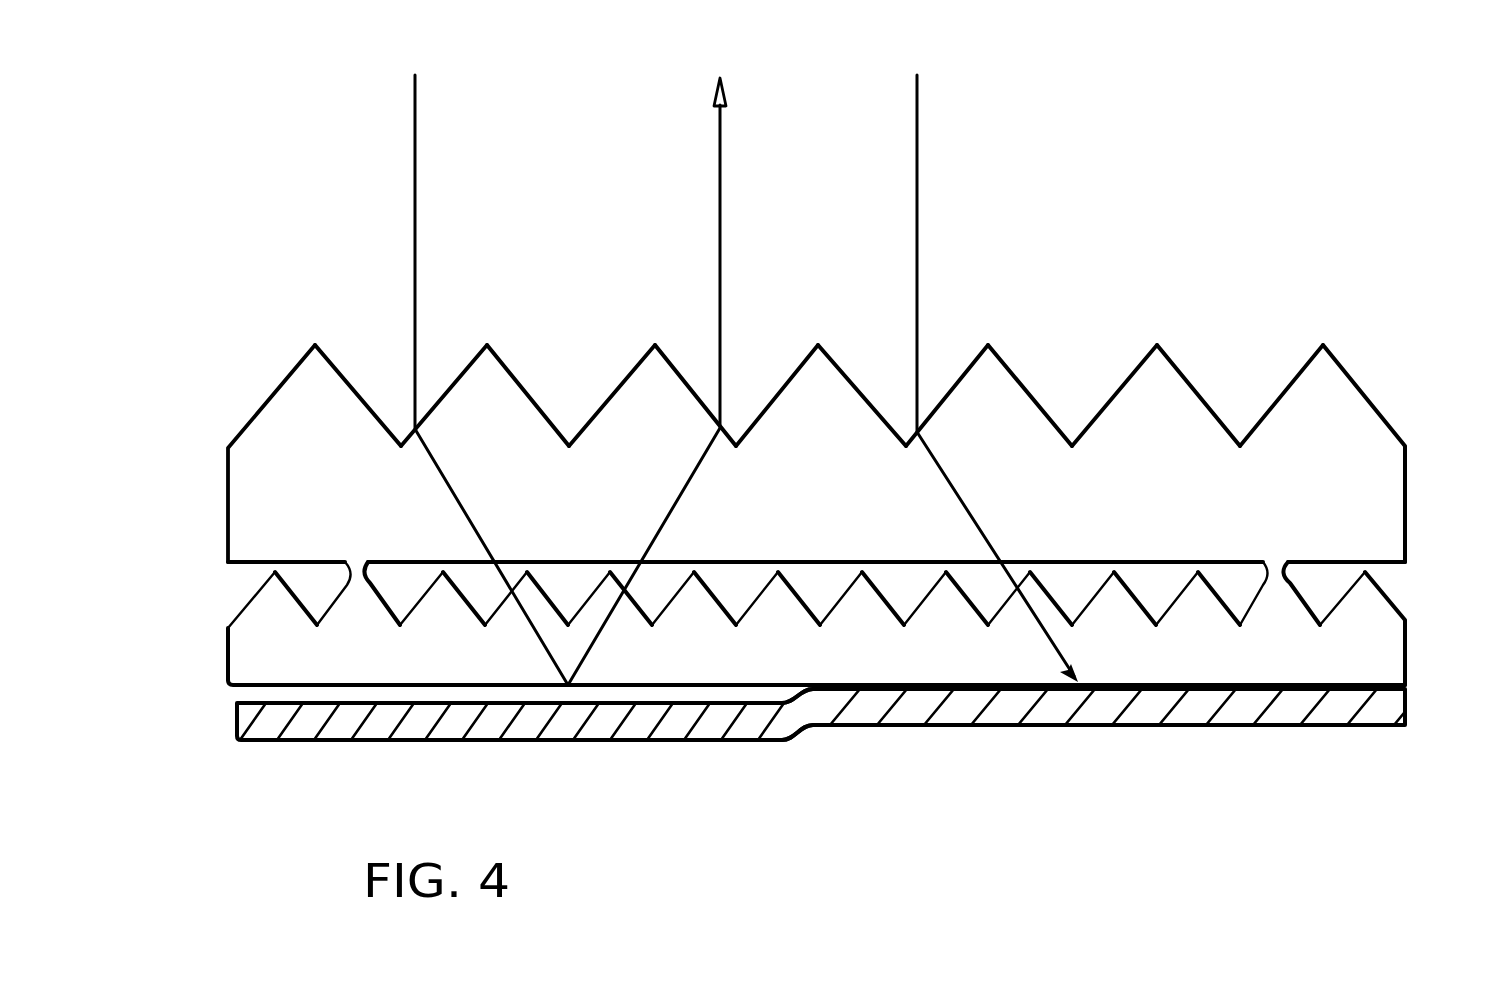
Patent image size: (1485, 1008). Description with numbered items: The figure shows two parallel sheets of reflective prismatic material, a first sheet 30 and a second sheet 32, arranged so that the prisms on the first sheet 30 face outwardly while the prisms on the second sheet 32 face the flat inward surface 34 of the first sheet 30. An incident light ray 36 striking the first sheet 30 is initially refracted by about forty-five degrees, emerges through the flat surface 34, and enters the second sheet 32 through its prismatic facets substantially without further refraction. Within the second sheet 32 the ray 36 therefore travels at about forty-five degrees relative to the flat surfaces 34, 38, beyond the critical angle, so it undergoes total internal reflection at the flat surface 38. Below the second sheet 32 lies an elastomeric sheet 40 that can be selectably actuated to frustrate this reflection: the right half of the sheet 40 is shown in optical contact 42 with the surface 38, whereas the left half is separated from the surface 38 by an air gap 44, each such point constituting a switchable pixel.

The first sheet 30 is at (1354, 440).
The second sheet 32 is at (1368, 637).
The flat inward surface 34 is at (290, 562).
The incident light ray 36 is at (416, 229).
The flat surface 38 is at (265, 685).
The elastomeric sheet 40 is at (888, 725).
The optical contact 42 is at (1160, 730).
The air gap 44 is at (242, 693).